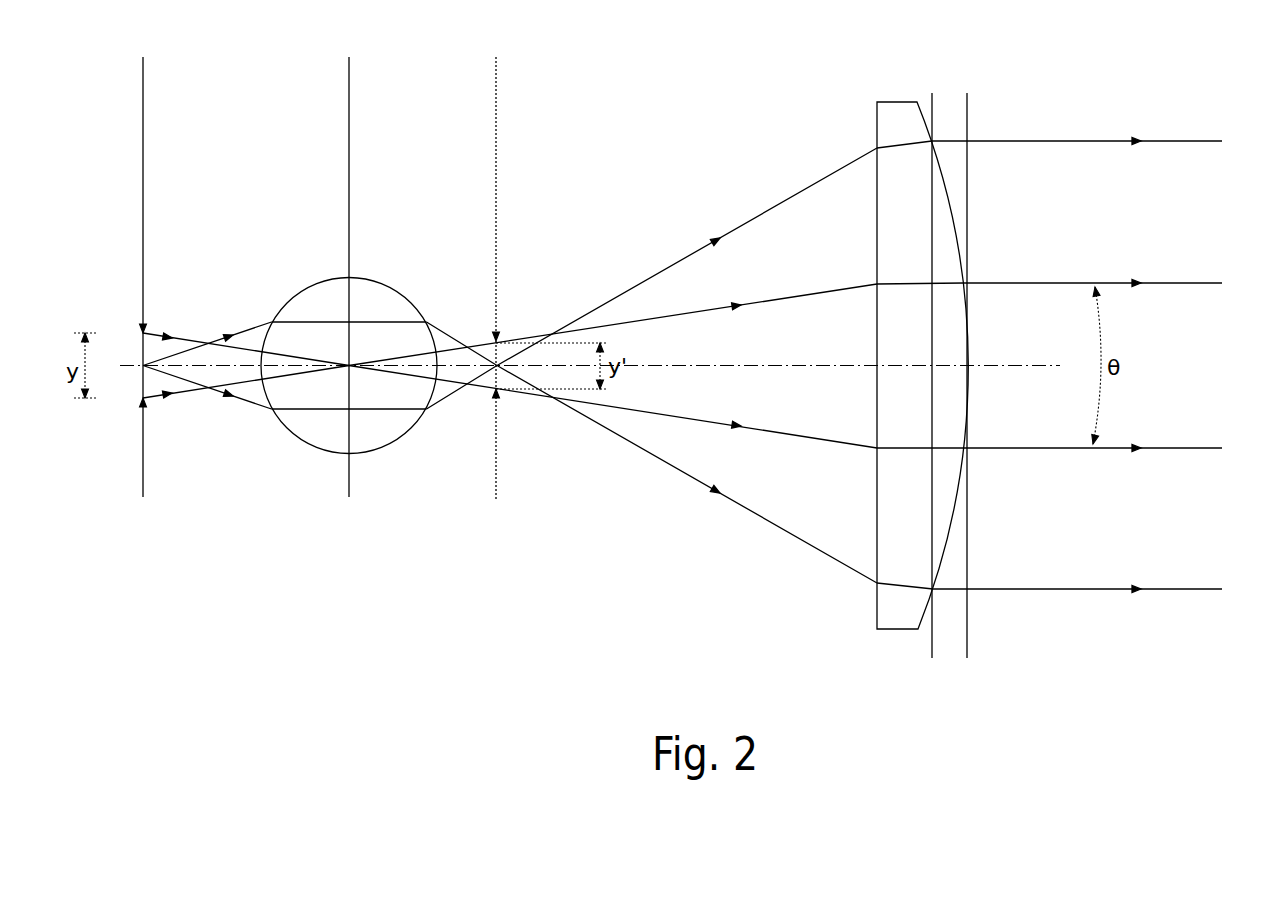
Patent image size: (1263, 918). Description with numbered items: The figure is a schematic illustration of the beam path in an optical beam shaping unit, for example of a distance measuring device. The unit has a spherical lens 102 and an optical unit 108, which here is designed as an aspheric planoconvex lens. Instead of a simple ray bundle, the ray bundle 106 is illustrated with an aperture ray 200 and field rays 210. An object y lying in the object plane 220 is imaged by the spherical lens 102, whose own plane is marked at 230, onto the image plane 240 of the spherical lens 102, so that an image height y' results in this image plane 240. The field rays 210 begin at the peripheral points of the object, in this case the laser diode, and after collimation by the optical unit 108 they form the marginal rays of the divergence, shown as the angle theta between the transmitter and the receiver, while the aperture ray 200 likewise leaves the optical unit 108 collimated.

The spherical lens 102 is at (308, 450).
The ray bundle 106 is at (689, 501).
The optical unit 108 is at (878, 603).
The aperture ray 200 is at (1175, 140).
The field ray 210 is at (1175, 282).
The object plane 220 is at (143, 57).
The lens plane 230 is at (349, 57).
The image plane 240 is at (508, 40).